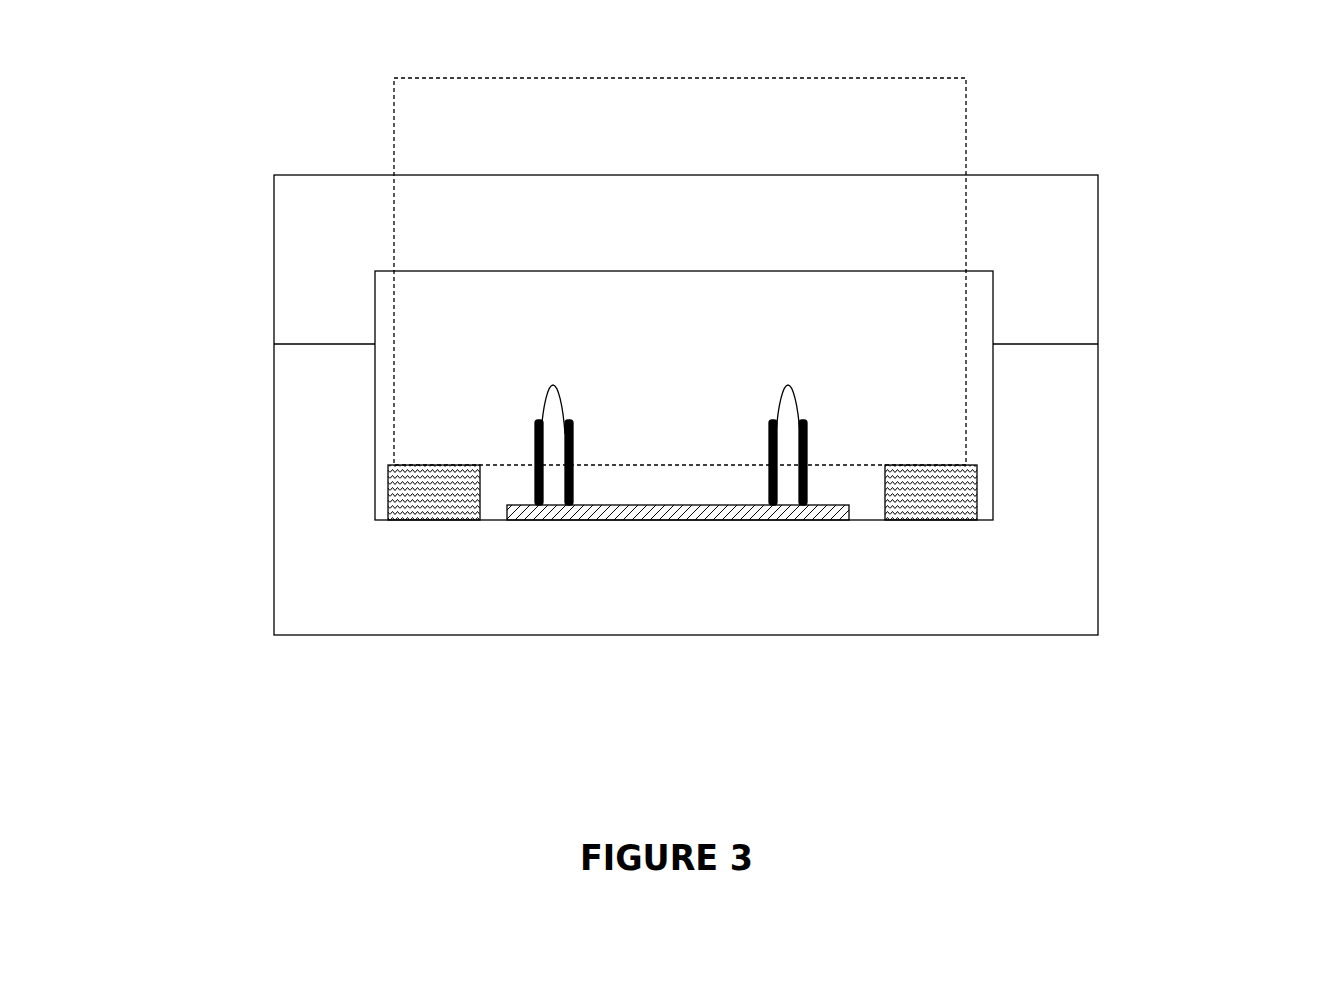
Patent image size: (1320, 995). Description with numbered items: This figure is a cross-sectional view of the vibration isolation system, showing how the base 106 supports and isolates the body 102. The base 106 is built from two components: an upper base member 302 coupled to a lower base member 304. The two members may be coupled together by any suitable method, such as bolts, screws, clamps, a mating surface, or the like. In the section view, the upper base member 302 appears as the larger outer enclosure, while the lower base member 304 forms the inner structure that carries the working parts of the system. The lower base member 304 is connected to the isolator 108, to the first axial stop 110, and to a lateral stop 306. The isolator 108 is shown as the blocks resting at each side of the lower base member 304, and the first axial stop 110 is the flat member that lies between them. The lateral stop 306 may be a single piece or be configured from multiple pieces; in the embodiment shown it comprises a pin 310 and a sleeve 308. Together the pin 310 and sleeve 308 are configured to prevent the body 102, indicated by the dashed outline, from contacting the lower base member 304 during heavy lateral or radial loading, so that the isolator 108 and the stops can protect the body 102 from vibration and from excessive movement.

The body 102 is at (976, 120).
The base 106 is at (200, 200).
The isolator 108 is at (430, 488).
The first axial stop 110 is at (637, 517).
The upper base member 302 is at (1050, 248).
The lower base member 304 is at (332, 402).
The lateral stop 306 is at (505, 392).
The sleeve 308 is at (814, 451).
The pin 310 is at (787, 413).